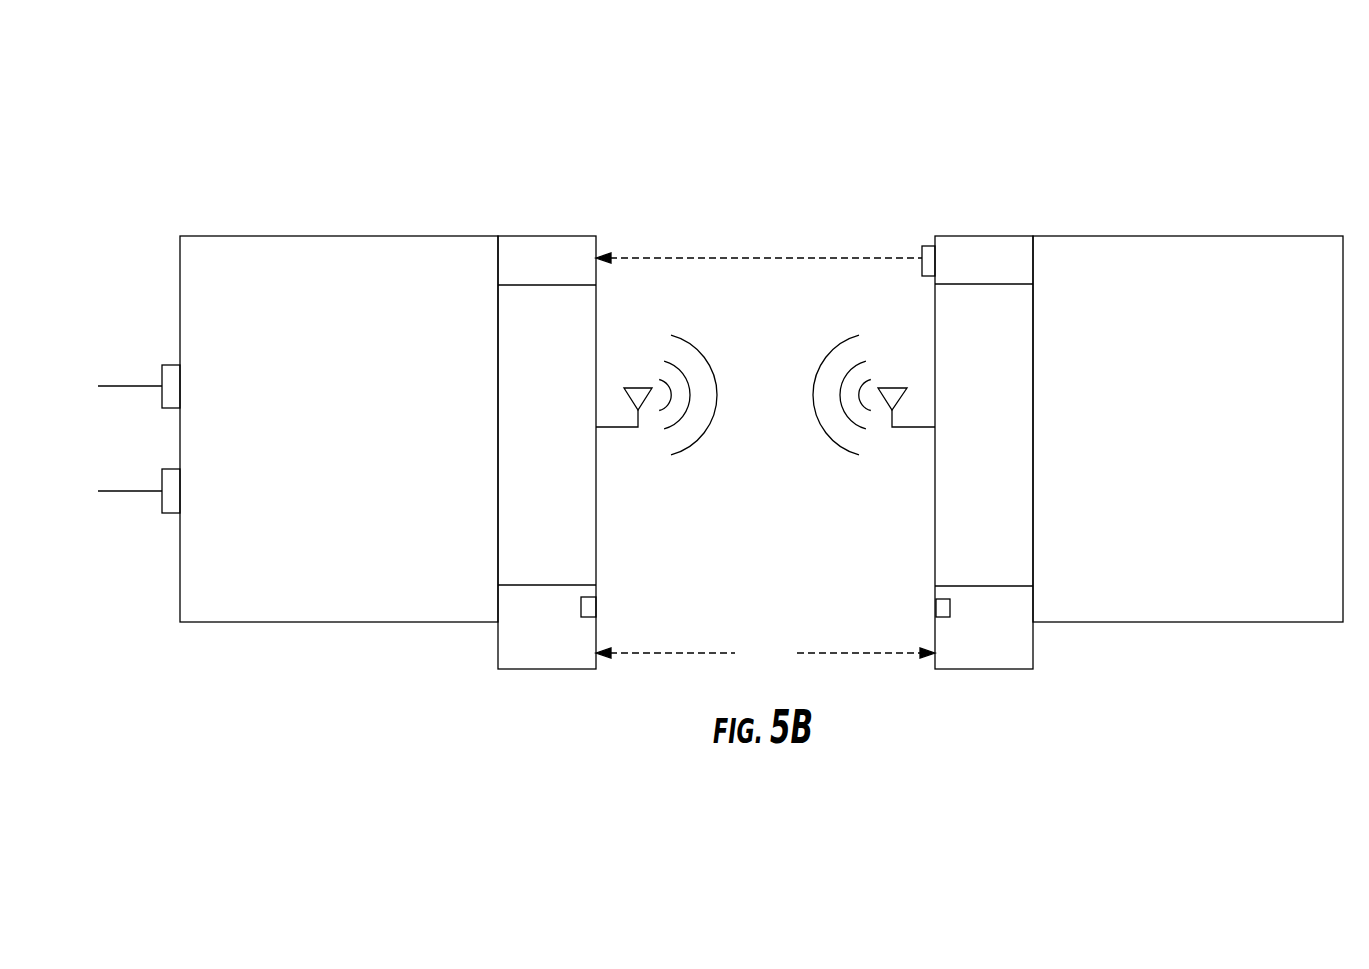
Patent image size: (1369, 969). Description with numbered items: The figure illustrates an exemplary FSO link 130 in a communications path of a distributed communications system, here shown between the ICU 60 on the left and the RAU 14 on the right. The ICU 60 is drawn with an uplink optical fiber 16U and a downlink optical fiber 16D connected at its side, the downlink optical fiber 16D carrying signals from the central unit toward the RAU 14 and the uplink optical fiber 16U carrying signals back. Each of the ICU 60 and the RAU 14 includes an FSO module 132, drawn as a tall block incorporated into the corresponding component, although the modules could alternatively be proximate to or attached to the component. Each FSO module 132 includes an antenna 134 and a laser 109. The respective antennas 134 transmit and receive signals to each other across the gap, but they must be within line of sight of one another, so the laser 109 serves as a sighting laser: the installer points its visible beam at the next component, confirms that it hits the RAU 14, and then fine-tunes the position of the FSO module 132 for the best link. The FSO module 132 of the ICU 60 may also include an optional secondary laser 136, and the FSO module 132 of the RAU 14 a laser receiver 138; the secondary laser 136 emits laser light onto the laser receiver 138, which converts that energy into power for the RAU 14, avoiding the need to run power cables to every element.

The RAU 14 is at (1142, 236).
The uplink optical fiber 16U is at (129, 383).
The downlink optical fiber 16D is at (129, 488).
The ICU 60 is at (385, 236).
The laser 109 is at (545, 669).
The FSO link 130 is at (851, 135).
The FSO module 132 is at (498, 572).
The antenna 134 is at (638, 386).
The secondary laser 136 is at (544, 248).
The laser receiver 138 is at (986, 248).